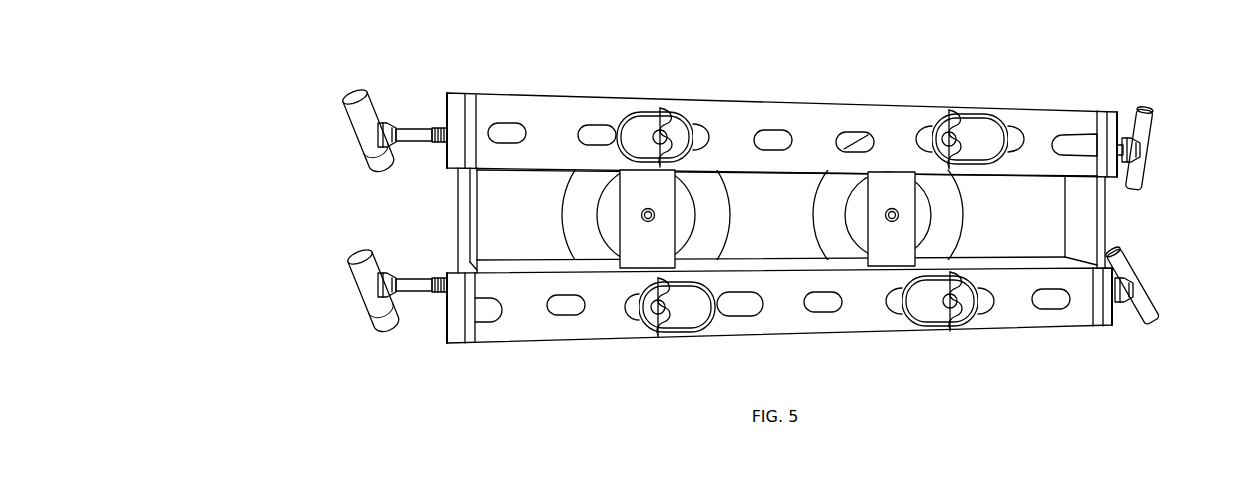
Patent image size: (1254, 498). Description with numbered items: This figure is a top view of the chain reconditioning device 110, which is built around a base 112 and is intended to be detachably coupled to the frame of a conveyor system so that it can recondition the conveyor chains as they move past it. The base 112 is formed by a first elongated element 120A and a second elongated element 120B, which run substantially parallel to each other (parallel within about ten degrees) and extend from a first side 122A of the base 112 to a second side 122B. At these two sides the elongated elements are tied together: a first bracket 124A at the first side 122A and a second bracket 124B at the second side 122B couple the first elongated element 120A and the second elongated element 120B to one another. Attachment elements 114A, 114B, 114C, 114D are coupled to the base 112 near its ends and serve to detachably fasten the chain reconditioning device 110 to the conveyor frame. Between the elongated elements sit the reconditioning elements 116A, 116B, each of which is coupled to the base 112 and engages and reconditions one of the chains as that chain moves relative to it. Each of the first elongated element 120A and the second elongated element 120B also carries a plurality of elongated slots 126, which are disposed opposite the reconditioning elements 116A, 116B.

The chain reconditioning device 110 is at (415, 73).
The base 112 is at (690, 98).
The attachment element 114A is at (365, 292).
The attachment element 114B is at (1145, 318).
The attachment element 114C is at (352, 97).
The attachment element 114D is at (1148, 150).
The reconditioning element 116A is at (572, 208).
The reconditioning element 116B is at (952, 214).
The first elongated element 120A is at (870, 340).
The second elongated element 120B is at (885, 108).
The first side 122A is at (378, 207).
The second side 122B is at (1158, 198).
The first bracket 124A is at (466, 222).
The second bracket 124B is at (1103, 236).
The elongated slots 126 is at (770, 150).